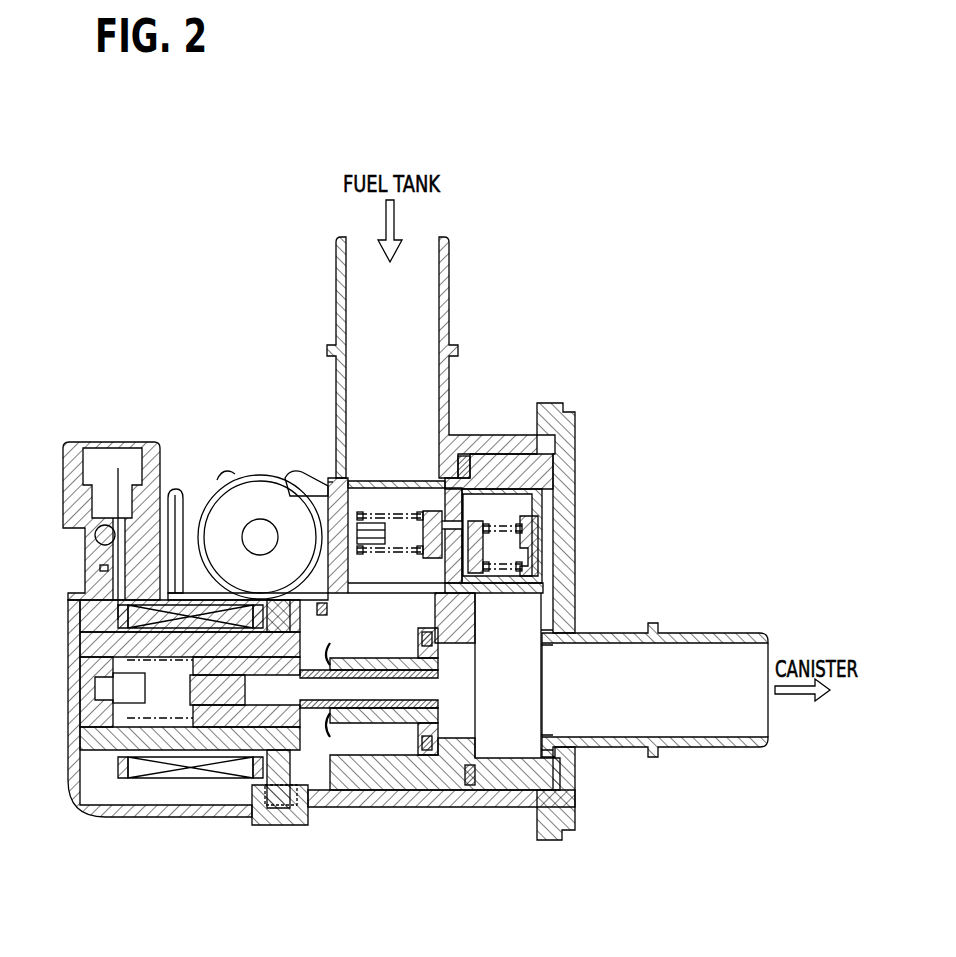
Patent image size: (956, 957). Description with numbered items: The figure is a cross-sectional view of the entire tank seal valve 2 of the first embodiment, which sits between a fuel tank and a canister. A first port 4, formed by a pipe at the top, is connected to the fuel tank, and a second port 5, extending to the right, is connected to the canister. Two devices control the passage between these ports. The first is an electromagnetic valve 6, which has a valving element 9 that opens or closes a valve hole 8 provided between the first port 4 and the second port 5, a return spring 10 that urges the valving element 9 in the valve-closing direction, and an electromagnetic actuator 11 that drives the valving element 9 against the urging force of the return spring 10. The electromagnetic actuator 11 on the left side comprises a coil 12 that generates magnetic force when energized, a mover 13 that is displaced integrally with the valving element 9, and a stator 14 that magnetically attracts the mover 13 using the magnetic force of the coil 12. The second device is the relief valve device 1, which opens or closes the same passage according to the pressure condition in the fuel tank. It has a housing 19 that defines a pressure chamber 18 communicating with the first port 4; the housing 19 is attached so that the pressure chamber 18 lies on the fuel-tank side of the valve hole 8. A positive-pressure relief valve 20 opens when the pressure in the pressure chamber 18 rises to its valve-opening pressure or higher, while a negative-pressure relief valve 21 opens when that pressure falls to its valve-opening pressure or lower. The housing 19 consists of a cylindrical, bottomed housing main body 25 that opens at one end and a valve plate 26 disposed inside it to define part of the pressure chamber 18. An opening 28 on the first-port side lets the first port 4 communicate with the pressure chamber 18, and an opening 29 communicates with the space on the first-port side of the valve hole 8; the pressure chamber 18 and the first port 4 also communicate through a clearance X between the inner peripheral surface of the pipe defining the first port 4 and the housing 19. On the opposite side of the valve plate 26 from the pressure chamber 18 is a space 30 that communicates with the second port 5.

The relief valve device 1 is at (476, 455).
The tank seal valve 2 is at (692, 258).
The first port 4 is at (425, 292).
The second port 5 is at (692, 723).
The electromagnetic valve 6 is at (373, 728).
The valve hole 8 is at (458, 712).
The valving element 9 is at (423, 758).
The return spring 10 is at (218, 775).
The electromagnetic actuator 11 is at (147, 818).
The coil 12 is at (183, 760).
The mover 13 is at (265, 790).
The stator 14 is at (74, 775).
The pressure chamber 18 is at (410, 502).
The housing 19 is at (292, 472).
The positive-pressure relief valve 20 is at (487, 522).
The negative-pressure relief valve 21 is at (385, 508).
The housing main body 25 is at (512, 474).
The valve plate 26 is at (463, 563).
The opening 28 is at (380, 503).
The opening 29 is at (440, 610).
The space 30 is at (543, 462).
The clearance X is at (333, 482).